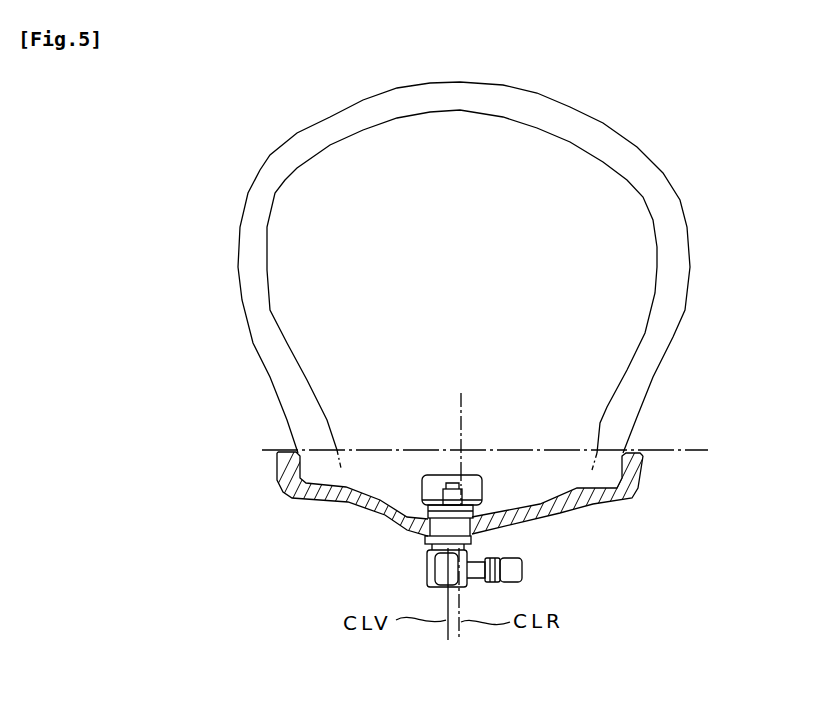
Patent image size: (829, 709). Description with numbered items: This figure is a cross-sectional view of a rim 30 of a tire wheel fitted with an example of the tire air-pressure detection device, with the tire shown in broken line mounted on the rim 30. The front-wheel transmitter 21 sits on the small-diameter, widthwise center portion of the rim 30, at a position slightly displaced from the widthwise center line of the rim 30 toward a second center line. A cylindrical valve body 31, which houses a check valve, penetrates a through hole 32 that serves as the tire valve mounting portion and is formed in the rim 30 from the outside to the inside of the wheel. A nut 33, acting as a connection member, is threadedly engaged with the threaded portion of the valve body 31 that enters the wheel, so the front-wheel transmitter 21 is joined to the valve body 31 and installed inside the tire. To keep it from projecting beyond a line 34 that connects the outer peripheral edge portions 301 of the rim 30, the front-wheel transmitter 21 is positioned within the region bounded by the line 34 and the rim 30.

The rim 30 is at (598, 423).
The outer peripheral edge portions 301 is at (282, 447).
The line 34 is at (681, 451).
The front-wheel transmitter 21 is at (488, 485).
The nut 33 is at (420, 507).
The through hole 32 is at (430, 547).
The valve body 31 is at (470, 543).